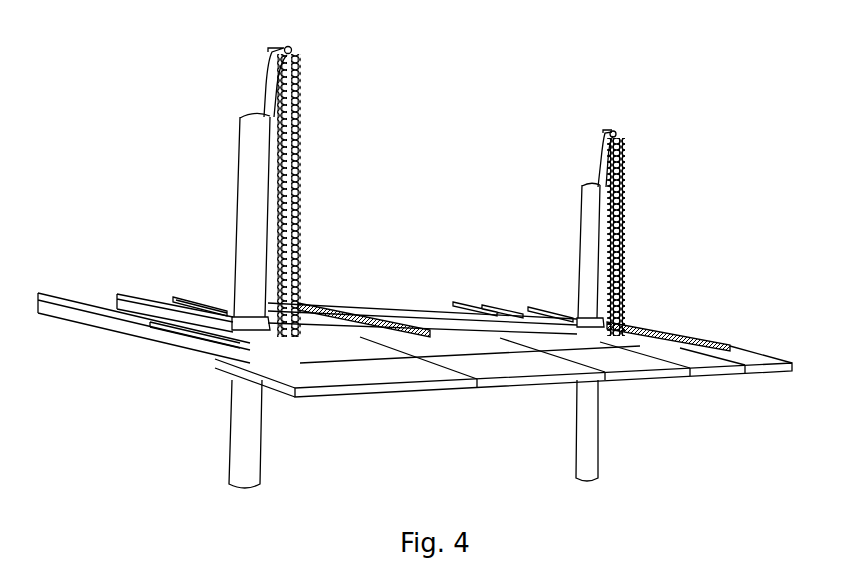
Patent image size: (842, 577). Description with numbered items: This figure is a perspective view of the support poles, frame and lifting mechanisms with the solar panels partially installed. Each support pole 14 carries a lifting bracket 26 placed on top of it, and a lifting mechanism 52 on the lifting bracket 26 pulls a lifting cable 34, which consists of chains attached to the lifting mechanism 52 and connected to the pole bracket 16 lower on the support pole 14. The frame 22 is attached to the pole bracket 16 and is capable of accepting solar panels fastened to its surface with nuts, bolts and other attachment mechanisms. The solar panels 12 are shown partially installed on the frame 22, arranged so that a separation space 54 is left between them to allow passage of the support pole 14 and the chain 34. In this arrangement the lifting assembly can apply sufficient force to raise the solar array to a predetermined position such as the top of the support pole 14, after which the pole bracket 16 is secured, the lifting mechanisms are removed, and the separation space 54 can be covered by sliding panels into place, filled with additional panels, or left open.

The solar panels 12 is at (740, 352).
The support pole 14 is at (243, 168).
The pole bracket 16 is at (259, 329).
The frame 22 is at (173, 298).
The lifting bracket 26 is at (270, 92).
The lifting cable 34 is at (304, 167).
The lifting mechanism 52 is at (292, 51).
The separation space 54 is at (233, 295).